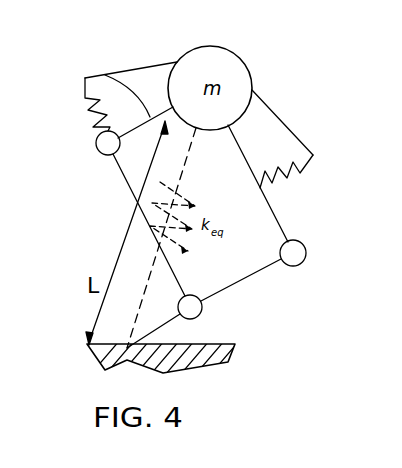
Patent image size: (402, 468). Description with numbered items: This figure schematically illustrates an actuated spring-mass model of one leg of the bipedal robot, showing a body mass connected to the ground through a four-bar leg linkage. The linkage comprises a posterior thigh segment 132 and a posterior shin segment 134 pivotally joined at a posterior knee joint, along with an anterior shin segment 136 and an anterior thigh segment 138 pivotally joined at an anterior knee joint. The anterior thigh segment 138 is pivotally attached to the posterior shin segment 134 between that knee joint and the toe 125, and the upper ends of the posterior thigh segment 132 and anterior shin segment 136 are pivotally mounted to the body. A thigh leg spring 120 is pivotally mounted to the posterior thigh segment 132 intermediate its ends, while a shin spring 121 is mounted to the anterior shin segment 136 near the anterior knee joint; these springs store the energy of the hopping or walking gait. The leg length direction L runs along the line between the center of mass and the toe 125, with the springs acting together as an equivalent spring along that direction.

The anterior shin segment 136 is at (105, 75).
The shin spring 121 is at (80, 100).
The anterior thigh segment 138 is at (118, 168).
The thigh leg spring 120 is at (312, 163).
The posterior thigh segment 132 is at (283, 233).
The posterior shin segment 134 is at (257, 278).
The toe 125 is at (127, 357).